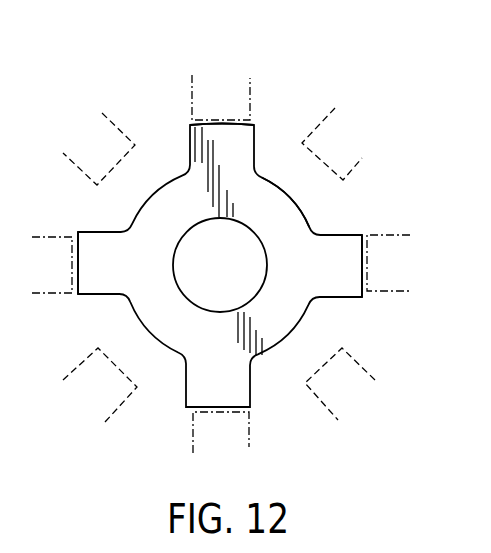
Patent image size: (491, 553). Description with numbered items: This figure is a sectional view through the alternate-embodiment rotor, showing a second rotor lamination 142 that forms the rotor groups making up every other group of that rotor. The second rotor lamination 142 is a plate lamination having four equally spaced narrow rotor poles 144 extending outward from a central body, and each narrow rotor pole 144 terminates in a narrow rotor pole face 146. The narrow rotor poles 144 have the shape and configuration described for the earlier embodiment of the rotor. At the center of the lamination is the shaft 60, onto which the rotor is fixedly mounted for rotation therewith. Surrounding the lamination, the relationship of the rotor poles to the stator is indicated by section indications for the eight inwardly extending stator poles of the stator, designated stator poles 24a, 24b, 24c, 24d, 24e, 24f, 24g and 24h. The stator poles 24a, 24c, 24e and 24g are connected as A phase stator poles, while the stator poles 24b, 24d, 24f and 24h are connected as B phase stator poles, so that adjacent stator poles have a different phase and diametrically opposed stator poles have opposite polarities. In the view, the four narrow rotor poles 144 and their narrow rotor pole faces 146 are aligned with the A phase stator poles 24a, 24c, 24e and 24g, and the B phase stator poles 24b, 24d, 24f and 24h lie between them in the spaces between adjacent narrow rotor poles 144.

The stator pole 24a is at (235, 102).
The stator pole 24b is at (342, 152).
The stator pole 24c is at (377, 255).
The stator pole 24d is at (342, 393).
The stator pole 24e is at (232, 433).
The stator pole 24f is at (105, 397).
The stator pole 24g is at (50, 277).
The stator pole 24h is at (98, 133).
The shaft 60 is at (252, 263).
The second rotor lamination 142 is at (258, 175).
The narrow rotor pole 144 is at (202, 152).
The narrow rotor pole face 146 is at (250, 122).